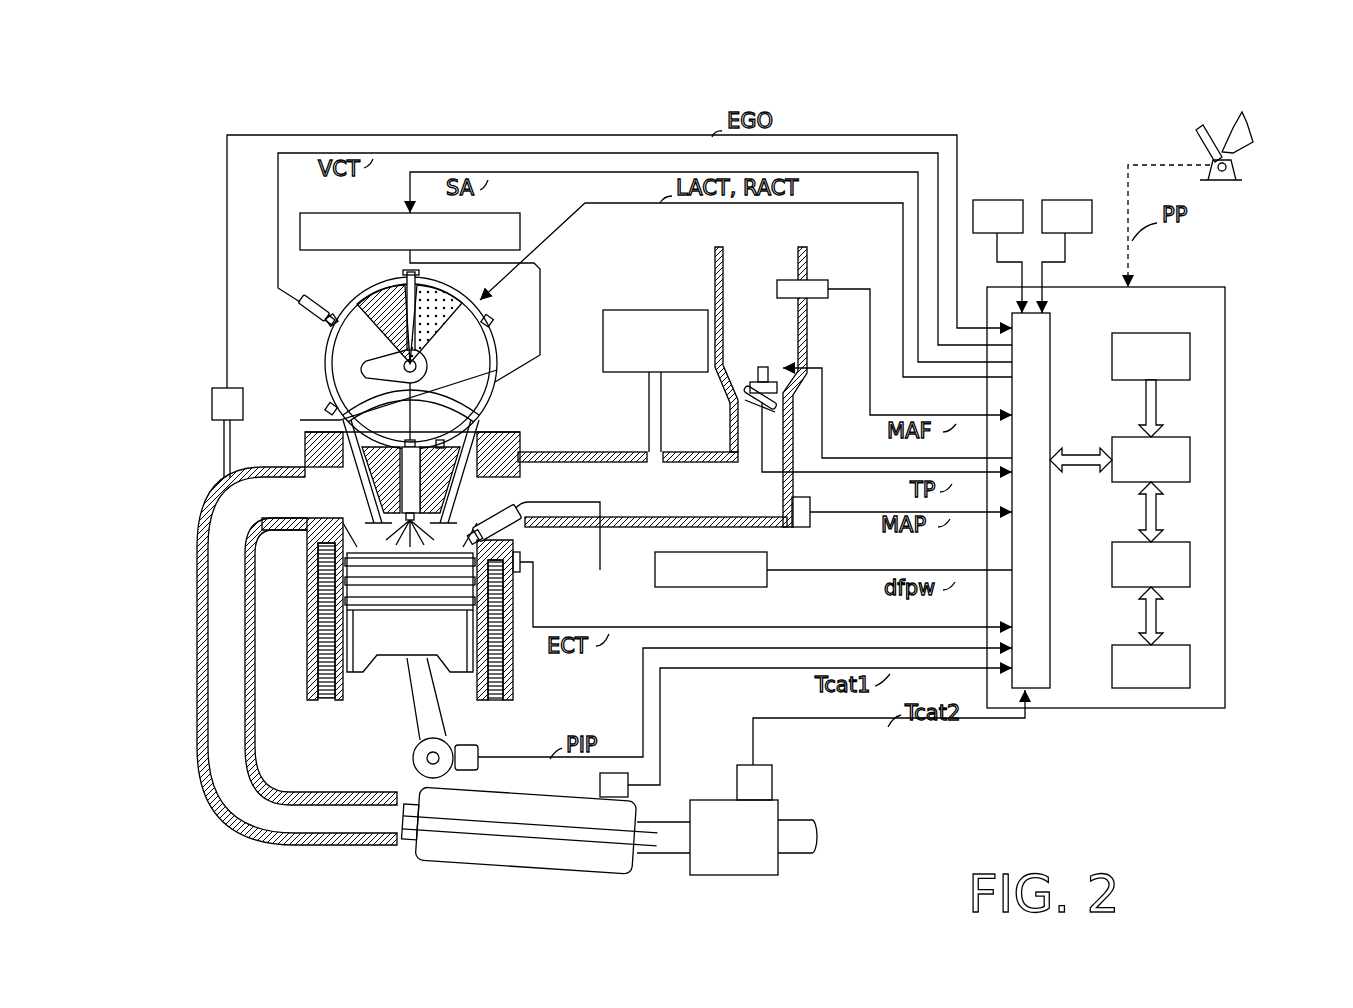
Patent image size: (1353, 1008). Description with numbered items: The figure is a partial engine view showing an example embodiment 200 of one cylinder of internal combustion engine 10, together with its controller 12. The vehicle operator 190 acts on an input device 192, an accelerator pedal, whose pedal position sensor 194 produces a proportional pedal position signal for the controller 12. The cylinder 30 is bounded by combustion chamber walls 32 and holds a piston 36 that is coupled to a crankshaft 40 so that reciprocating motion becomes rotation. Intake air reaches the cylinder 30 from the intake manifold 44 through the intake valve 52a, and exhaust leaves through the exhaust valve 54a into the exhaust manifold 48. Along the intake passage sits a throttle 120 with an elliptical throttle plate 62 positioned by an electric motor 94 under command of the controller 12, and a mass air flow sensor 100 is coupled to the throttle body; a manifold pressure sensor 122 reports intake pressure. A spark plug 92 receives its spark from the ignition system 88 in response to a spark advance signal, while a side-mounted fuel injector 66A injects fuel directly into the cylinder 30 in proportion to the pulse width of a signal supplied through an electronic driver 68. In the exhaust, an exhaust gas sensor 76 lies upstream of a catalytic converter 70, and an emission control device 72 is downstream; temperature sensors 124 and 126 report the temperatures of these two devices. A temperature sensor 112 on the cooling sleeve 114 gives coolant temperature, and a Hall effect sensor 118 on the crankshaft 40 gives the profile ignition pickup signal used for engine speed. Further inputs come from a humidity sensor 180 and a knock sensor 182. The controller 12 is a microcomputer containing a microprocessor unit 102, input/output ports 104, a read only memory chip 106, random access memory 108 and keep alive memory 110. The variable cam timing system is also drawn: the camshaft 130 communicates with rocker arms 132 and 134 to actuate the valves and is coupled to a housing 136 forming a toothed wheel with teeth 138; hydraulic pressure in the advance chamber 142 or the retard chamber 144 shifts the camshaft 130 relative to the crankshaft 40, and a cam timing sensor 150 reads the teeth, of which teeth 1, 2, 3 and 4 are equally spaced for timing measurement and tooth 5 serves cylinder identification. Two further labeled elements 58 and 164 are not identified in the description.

The example embodiment 200 is at (142, 70).
The internal combustion engine 10 is at (177, 262).
The controller 12 is at (1188, 291).
The cylinder 30 is at (372, 546).
The combustion chamber walls 32 is at (350, 693).
The piston 36 is at (413, 641).
The crankshaft 40 is at (414, 759).
The intake manifold 44 is at (662, 387).
The exhaust manifold 48 is at (222, 535).
The intake valve 52a is at (492, 510).
The exhaust valve 54a is at (352, 497).
The fuel line 58 is at (746, 443).
The throttle plate 62 is at (743, 388).
The fuel injector 66A is at (521, 536).
The electronic driver 68 is at (770, 562).
The catalytic converter 70 is at (487, 797).
The emission control device 72 is at (714, 800).
The exhaust gas sensor 76 is at (213, 390).
The ignition system 88 is at (518, 233).
The spark plug 92 is at (396, 448).
The electric motor 94 is at (762, 366).
The mass air flow sensor 100 is at (820, 280).
The microprocessor unit 102 is at (1165, 439).
The input/output ports 104 is at (1057, 356).
The read only memory chip 106 is at (1140, 334).
The random access memory 108 is at (1165, 544).
The keep alive memory 110 is at (1165, 646).
The temperature sensor 112 is at (522, 566).
The cooling sleeve 114 is at (504, 669).
The Hall effect sensor 118 is at (467, 745).
The throttle 120 is at (745, 401).
The manifold pressure sensor 122 is at (812, 504).
The temperature sensor 124 is at (598, 791).
The temperature sensor 126 is at (775, 776).
The camshaft 130 is at (372, 368).
The rocker arm 132 is at (338, 418).
The rocker arm 134 is at (483, 424).
The housing 136 is at (322, 388).
The teeth 138 is at (493, 318).
The advance chamber 142 is at (430, 303).
The retard chamber 144 is at (381, 294).
The cam timing sensor 150 is at (303, 315).
The fuel system 164 is at (660, 311).
The humidity sensor 180 is at (998, 216).
The knock sensor 182 is at (1067, 216).
The vehicle operator 190 is at (1247, 125).
The input device 192 is at (1198, 141).
The pedal position sensor 194 is at (1232, 166).
The tooth 1 is at (405, 279).
The tooth 2 is at (492, 326).
The tooth 3 is at (440, 446).
The tooth 4 is at (328, 408).
The tooth 5 is at (329, 326).